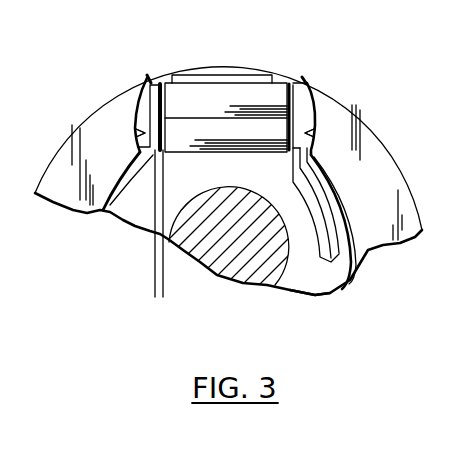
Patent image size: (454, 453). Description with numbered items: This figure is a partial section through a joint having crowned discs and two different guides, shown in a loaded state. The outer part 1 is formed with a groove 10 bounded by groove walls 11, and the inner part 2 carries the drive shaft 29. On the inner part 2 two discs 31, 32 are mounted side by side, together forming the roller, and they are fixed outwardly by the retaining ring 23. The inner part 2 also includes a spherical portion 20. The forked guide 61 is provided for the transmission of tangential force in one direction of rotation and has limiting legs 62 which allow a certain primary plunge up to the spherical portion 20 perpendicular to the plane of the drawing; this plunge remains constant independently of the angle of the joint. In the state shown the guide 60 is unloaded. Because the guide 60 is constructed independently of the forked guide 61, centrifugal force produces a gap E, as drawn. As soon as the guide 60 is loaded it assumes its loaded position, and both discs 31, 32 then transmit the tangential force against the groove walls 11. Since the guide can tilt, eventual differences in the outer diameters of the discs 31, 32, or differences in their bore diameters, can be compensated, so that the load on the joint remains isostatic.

The outer part 1 is at (378, 240).
The inner part 2 is at (318, 293).
The groove 10 is at (165, 72).
The groove walls 11 is at (143, 132).
The spherical portion 20 is at (128, 220).
The retaining ring 23 is at (204, 69).
The drive shaft 29 is at (237, 273).
The disc 31 is at (255, 88).
The disc 32 is at (270, 132).
The guide 60 is at (146, 100).
The forked guide 61 is at (310, 102).
The limiting legs 62 is at (325, 205).
The gap E is at (162, 290).